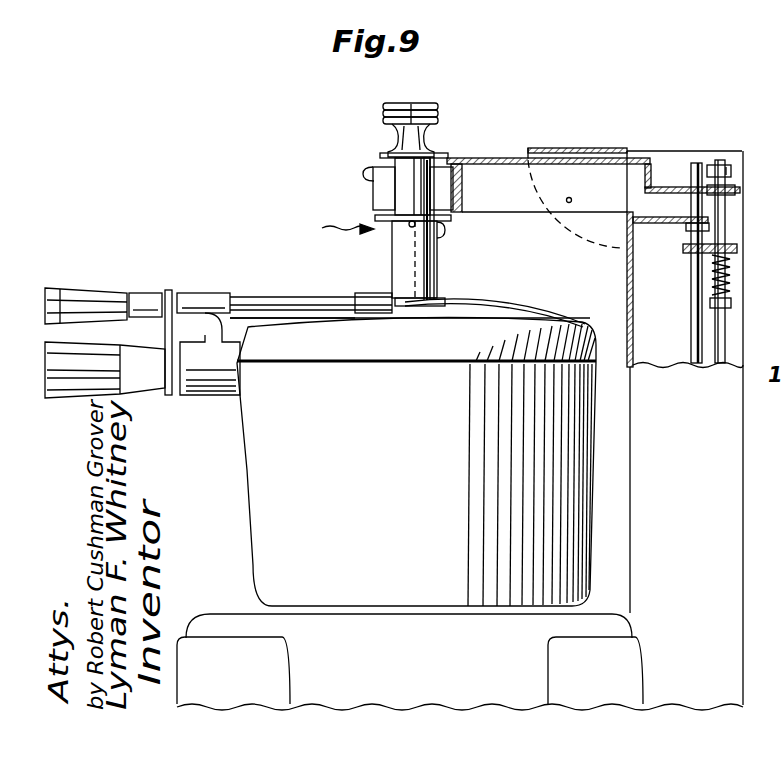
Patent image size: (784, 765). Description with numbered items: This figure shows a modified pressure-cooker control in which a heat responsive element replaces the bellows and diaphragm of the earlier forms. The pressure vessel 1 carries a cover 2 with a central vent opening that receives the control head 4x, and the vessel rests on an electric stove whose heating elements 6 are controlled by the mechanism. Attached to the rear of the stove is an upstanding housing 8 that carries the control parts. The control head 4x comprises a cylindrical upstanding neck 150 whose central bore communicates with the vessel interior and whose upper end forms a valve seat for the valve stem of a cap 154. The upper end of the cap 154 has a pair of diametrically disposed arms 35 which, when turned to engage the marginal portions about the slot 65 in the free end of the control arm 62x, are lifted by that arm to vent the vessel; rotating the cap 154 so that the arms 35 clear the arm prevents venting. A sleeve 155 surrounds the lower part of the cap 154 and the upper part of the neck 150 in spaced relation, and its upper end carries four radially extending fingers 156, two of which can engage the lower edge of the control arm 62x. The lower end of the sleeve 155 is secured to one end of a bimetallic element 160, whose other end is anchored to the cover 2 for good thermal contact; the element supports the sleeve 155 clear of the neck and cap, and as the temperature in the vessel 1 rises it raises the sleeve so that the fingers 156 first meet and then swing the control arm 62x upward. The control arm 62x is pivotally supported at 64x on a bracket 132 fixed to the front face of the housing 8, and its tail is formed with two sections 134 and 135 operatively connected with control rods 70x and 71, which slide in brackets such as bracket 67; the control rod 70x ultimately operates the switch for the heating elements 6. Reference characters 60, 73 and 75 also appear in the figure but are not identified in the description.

The pressure vessel 1 is at (416, 462).
The cover 2 is at (462, 318).
The control head 4x is at (329, 230).
The heating elements 6 is at (258, 612).
The housing 8 is at (626, 291).
The arms 35 is at (414, 140).
The arc of movement 60 is at (622, 225).
The control arm 62x is at (486, 184).
The pivot 64x is at (576, 186).
The slot 65 is at (438, 156).
The bracket 67 is at (728, 250).
The control rod 70x is at (691, 322).
The control rod 71 is at (726, 326).
The nut 73 is at (722, 165).
The nut 75 is at (735, 190).
The bracket 132 is at (590, 150).
The tail section 134 is at (654, 224).
The tail section 135 is at (660, 185).
The neck 150 is at (430, 302).
The cap 154 is at (405, 190).
The sleeve 155 is at (398, 258).
The fingers 156 is at (415, 226).
The bimetallic element 160 is at (532, 310).